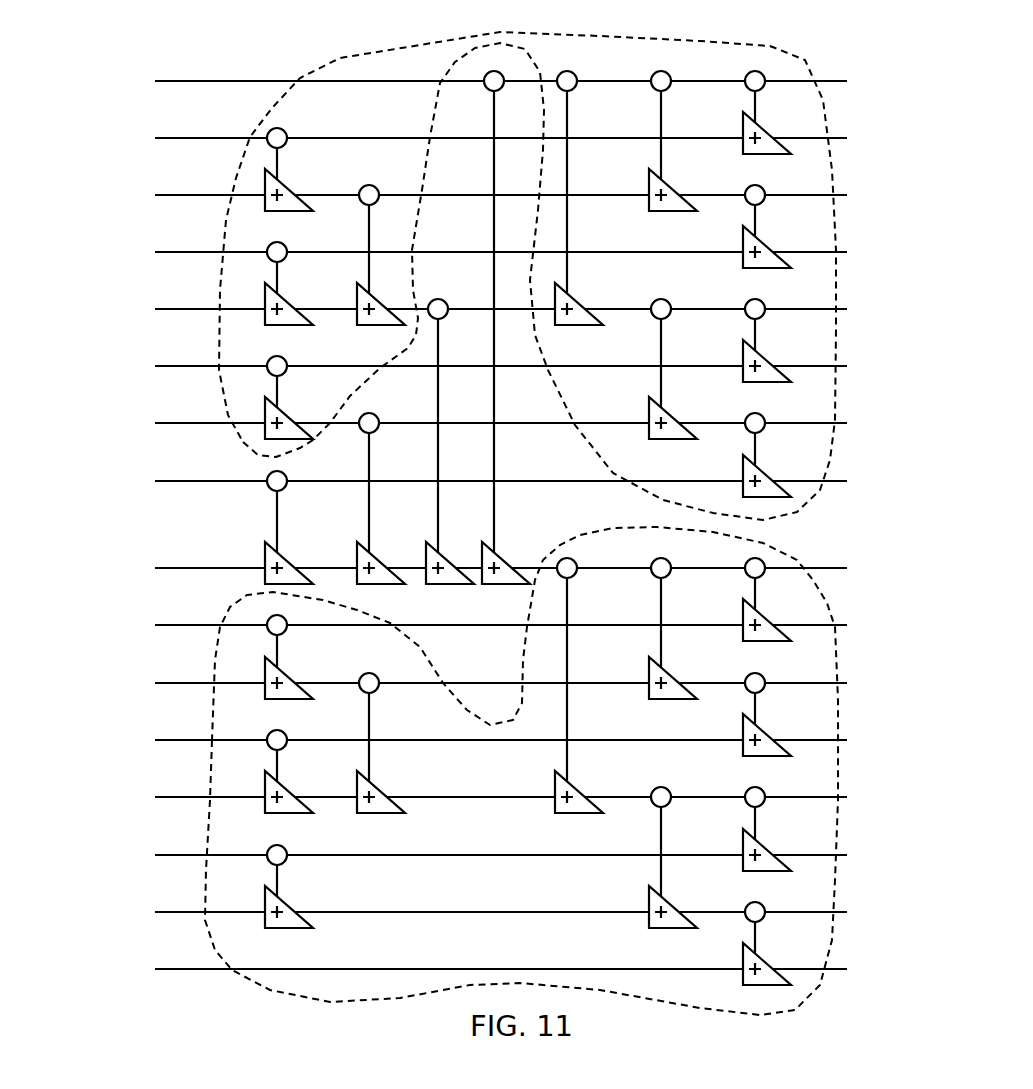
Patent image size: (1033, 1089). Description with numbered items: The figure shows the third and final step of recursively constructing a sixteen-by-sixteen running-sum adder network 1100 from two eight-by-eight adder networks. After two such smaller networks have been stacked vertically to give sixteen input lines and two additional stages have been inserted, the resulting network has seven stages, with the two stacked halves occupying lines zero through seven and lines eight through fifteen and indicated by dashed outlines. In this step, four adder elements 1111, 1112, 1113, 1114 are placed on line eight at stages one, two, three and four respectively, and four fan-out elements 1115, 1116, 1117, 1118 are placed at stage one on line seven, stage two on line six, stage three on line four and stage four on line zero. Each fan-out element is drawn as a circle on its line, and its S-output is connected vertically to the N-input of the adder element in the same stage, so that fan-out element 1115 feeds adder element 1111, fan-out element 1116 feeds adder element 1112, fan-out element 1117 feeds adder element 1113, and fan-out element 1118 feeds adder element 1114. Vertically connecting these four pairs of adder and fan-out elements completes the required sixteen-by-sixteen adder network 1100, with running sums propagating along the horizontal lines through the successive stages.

The adder network 1100 is at (158, 63).
The adder element 1111 is at (267, 553).
The adder element 1112 is at (357, 553).
The adder element 1113 is at (425, 553).
The adder element 1114 is at (508, 553).
The fan-out element 1115 is at (268, 475).
The fan-out element 1116 is at (392, 408).
The fan-out element 1117 is at (455, 288).
The fan-out element 1118 is at (485, 90).